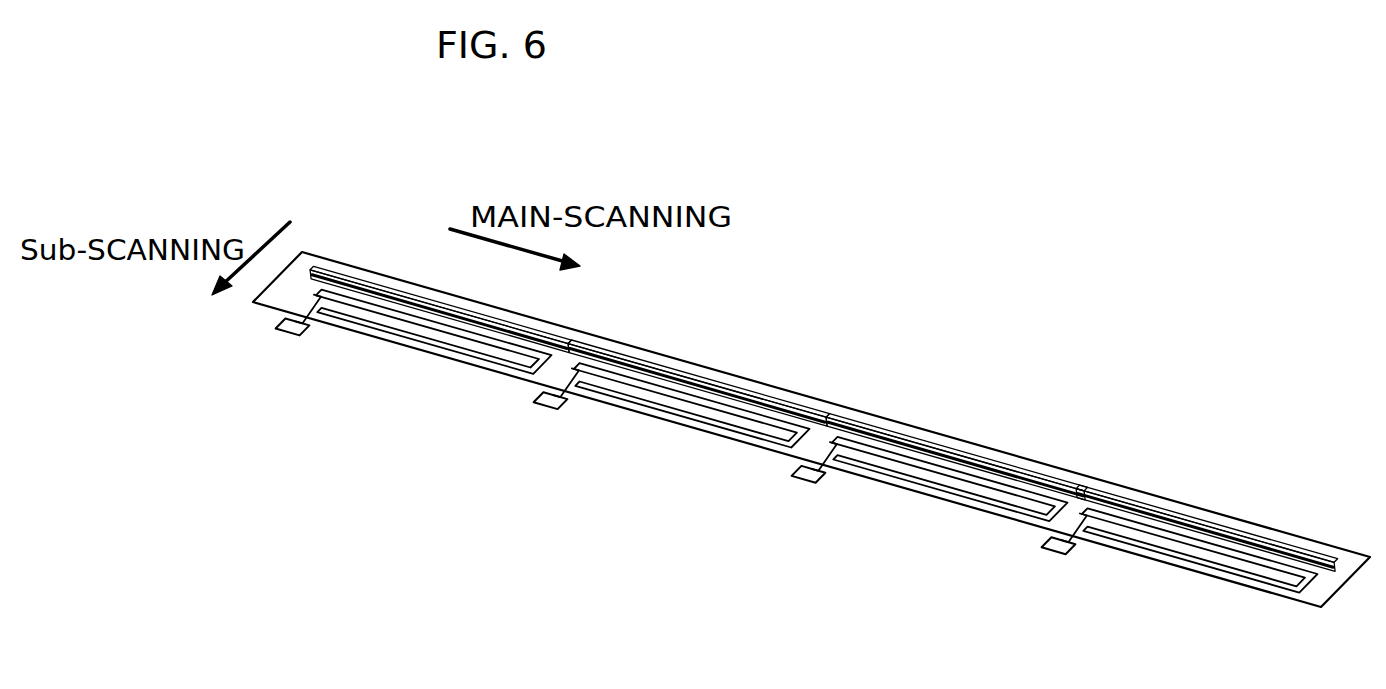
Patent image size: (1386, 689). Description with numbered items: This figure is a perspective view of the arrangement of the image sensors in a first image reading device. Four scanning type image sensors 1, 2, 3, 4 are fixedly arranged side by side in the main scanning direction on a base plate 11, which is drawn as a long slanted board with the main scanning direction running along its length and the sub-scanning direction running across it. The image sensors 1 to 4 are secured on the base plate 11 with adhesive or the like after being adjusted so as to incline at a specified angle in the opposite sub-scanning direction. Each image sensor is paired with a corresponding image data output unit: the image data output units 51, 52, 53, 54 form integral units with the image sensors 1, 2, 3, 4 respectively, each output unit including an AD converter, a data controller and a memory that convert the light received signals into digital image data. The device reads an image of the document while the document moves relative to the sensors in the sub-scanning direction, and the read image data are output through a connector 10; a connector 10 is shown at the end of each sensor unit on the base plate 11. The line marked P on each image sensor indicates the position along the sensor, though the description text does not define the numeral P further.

The base plate 11 is at (306, 259).
The image sensor 1 is at (452, 300).
The image sensor 2 is at (724, 372).
The image sensor 3 is at (986, 447).
The image sensor 4 is at (1247, 527).
The heating element line P is at (382, 300).
The connector 10 is at (299, 340).
The image data output unit 51 is at (415, 332).
The image data output unit 52 is at (692, 405).
The image data output unit 53 is at (975, 485).
The image data output unit 54 is at (1222, 568).